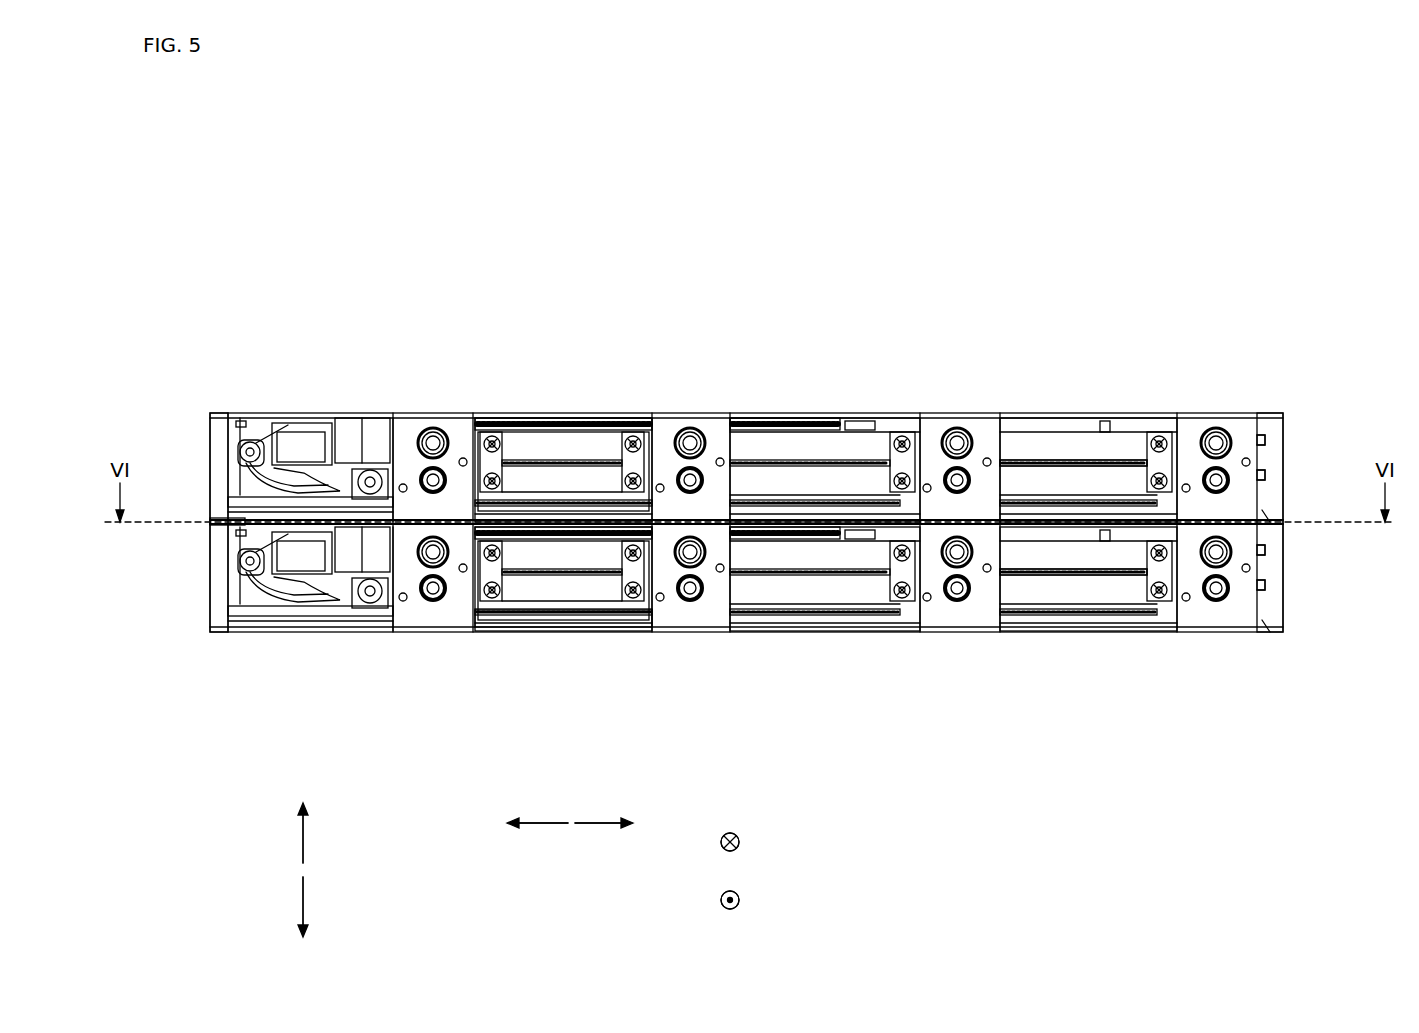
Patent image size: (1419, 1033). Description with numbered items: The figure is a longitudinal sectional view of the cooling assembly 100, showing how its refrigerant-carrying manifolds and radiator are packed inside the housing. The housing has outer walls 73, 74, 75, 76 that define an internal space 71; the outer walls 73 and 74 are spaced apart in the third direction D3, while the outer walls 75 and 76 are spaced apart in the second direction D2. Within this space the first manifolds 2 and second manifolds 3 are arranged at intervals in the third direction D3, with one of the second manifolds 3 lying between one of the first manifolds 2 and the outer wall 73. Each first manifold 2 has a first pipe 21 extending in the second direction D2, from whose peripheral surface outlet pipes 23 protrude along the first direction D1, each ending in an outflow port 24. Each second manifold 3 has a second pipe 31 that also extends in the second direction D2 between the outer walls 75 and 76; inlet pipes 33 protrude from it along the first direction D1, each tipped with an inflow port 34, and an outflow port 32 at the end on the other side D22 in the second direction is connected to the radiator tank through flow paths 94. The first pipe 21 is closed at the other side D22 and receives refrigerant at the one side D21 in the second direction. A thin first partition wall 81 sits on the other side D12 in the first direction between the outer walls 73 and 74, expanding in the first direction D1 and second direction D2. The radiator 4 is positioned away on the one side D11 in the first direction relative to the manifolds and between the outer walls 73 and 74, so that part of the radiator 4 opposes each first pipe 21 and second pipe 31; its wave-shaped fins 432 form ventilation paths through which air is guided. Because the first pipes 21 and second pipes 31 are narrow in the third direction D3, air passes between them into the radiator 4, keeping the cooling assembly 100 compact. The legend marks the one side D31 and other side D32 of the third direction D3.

The cooling assembly 100 is at (998, 228).
The first manifold 2 is at (1266, 475).
The second manifold 3 is at (1266, 440).
The radiator 4 is at (810, 408).
The first pipe 21 is at (1015, 482).
The outlet pipe 23 is at (463, 458).
The outflow port 24 is at (436, 475).
The second pipe 31 is at (1085, 422).
The outflow port 32 is at (335, 420).
The inlet pipe 33 is at (425, 438).
The inflow port 34 is at (433, 440).
The internal space 71 is at (510, 622).
The outer wall 73 is at (245, 413).
The outer wall 74 is at (250, 632).
The outer wall 75 is at (1283, 612).
The outer wall 76 is at (210, 548).
The first partition wall 81 is at (240, 520).
The flow path 94 is at (300, 430).
The fin 432 is at (607, 500).
The first direction D1 is at (793, 822).
The one side in the first direction D11 is at (755, 842).
The other side in the first direction D12 is at (755, 900).
The second direction D2 is at (510, 896).
The one side in the second direction D21 is at (597, 828).
The other side in the second direction D22 is at (538, 828).
The third direction D3 is at (390, 822).
The one side in the third direction D31 is at (303, 840).
The other side in the third direction D32 is at (303, 898).